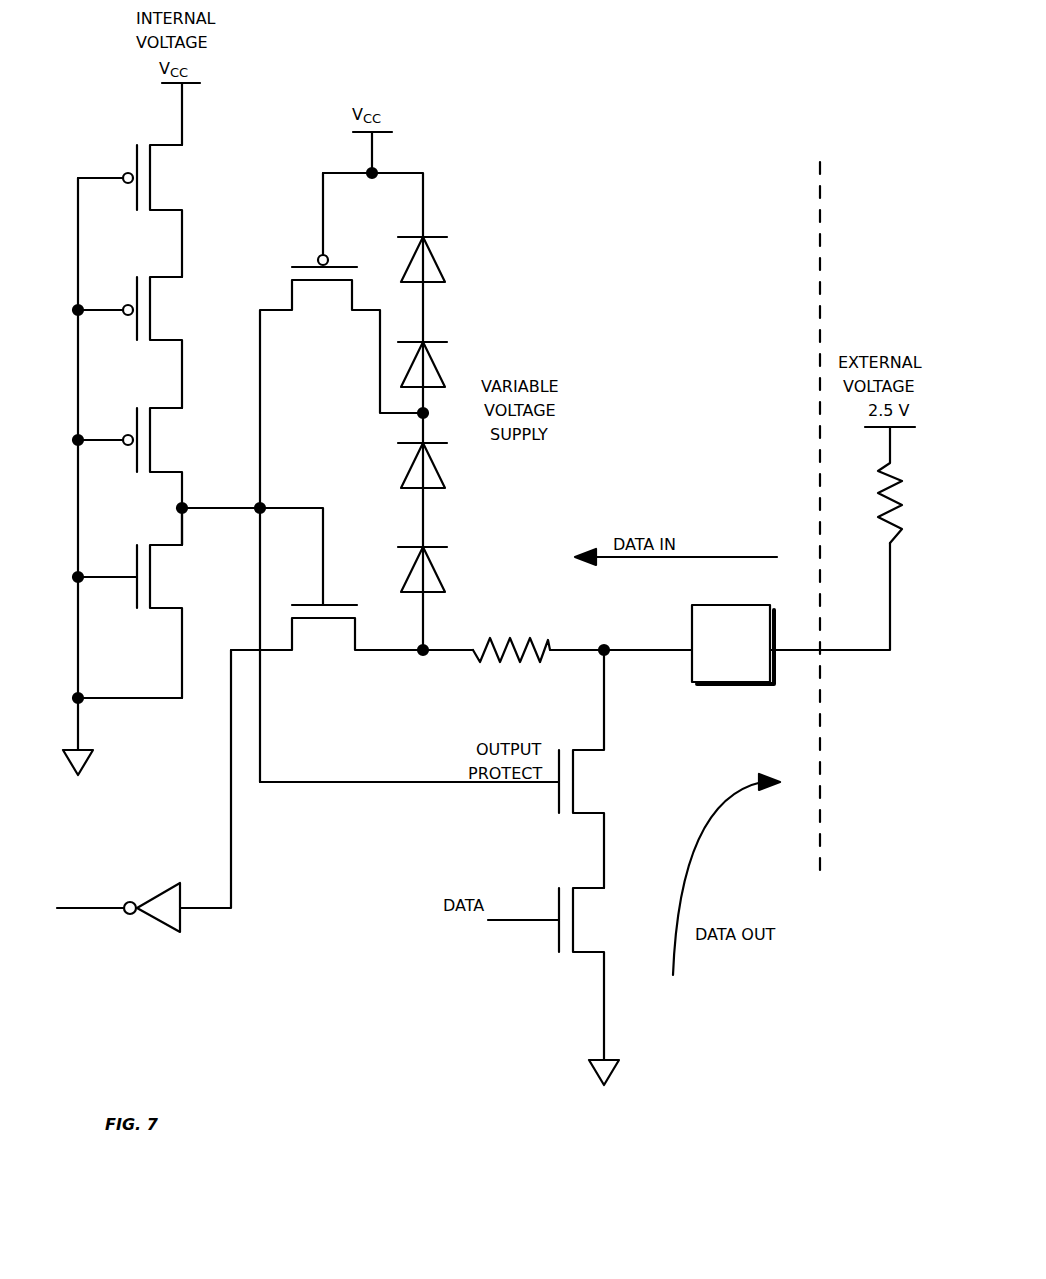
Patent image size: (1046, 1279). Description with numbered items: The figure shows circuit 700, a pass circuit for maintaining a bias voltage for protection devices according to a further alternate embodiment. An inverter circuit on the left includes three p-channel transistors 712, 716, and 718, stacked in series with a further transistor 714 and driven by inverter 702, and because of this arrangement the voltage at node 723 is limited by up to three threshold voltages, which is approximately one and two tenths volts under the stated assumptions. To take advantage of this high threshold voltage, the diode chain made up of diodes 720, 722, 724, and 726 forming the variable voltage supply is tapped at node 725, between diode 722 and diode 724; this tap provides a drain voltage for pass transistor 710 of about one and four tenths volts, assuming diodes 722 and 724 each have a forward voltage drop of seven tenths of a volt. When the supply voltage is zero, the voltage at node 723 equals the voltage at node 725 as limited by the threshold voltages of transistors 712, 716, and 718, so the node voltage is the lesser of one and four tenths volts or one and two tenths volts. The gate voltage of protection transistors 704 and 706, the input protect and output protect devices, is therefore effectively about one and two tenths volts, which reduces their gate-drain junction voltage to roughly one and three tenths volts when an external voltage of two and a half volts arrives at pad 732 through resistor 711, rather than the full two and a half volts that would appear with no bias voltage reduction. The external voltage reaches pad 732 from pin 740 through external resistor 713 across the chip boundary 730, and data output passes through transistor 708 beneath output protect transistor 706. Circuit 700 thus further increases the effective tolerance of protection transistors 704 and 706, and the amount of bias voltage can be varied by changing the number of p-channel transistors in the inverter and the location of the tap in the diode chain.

The circuit 700 is at (523, 182).
The inverter 702 is at (144, 806).
The protection transistor 704 is at (352, 662).
The protection transistor 706 is at (447, 769).
The data output transistor 708 is at (560, 986).
The pass transistor 710 is at (341, 477).
The resistor 711 is at (582, 665).
The transistor 712 is at (144, 476).
The external resistor 713 is at (872, 485).
The transistor 714 is at (144, 603).
The transistor 716 is at (144, 342).
The transistor 718 is at (144, 211).
The diode 720 is at (439, 259).
The diode 722 is at (440, 364).
The node 723 is at (250, 543).
The diode 724 is at (439, 465).
The node 725 is at (441, 414).
The diode 726 is at (441, 569).
The chip boundary 730 is at (815, 508).
The pad 732 is at (733, 644).
The pin 740 is at (830, 620).